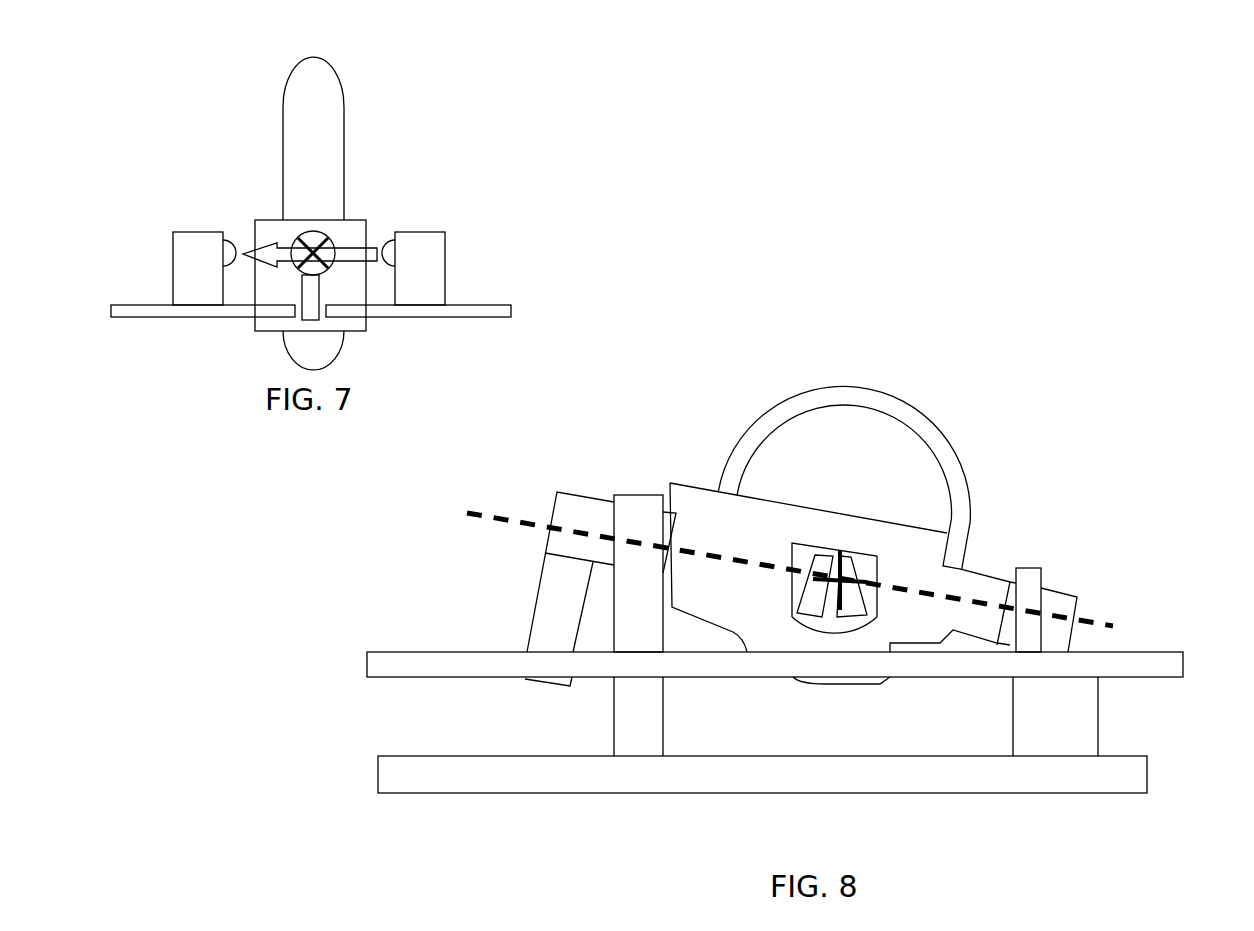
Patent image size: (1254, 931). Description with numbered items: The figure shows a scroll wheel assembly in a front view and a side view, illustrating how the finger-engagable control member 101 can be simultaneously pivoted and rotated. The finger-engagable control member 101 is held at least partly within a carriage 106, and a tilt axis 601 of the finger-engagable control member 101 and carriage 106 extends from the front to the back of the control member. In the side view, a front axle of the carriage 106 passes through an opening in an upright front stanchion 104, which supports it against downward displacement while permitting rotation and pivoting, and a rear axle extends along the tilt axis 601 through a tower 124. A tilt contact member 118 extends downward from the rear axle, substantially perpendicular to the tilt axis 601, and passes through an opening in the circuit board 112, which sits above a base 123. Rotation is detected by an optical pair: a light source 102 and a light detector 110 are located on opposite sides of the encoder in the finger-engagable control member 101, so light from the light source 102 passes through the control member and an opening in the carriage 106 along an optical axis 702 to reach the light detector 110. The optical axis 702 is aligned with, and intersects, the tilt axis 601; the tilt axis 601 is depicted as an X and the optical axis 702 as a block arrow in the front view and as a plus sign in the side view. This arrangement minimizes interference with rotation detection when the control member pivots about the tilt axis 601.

In FIG. 7, the finger-engagable control member 101 is at (345, 103).
In FIG. 8, the finger-engagable control member 101 is at (942, 432).
In FIG. 7, the light source 102 is at (393, 252).
In FIG. 8, the upright front stanchion 104 is at (1025, 567).
In FIG. 7, the carriage 106 is at (268, 230).
In FIG. 8, the carriage 106 is at (732, 517).
In FIG. 7, the light detector 110 is at (220, 253).
In FIG. 7, the circuit board 112 is at (147, 302).
In FIG. 8, the circuit board 112 is at (402, 655).
In FIG. 8, the tilt contact member 118 is at (523, 598).
In FIG. 8, the base 123 is at (1148, 768).
In FIG. 8, the tower 124 is at (643, 505).
In FIG. 7, the tilt axis 601 is at (312, 250).
In FIG. 8, the tilt axis 601 is at (1110, 618).
In FIG. 7, the optical axis 702 is at (347, 250).
In FIG. 8, the optical axis 702 is at (835, 575).